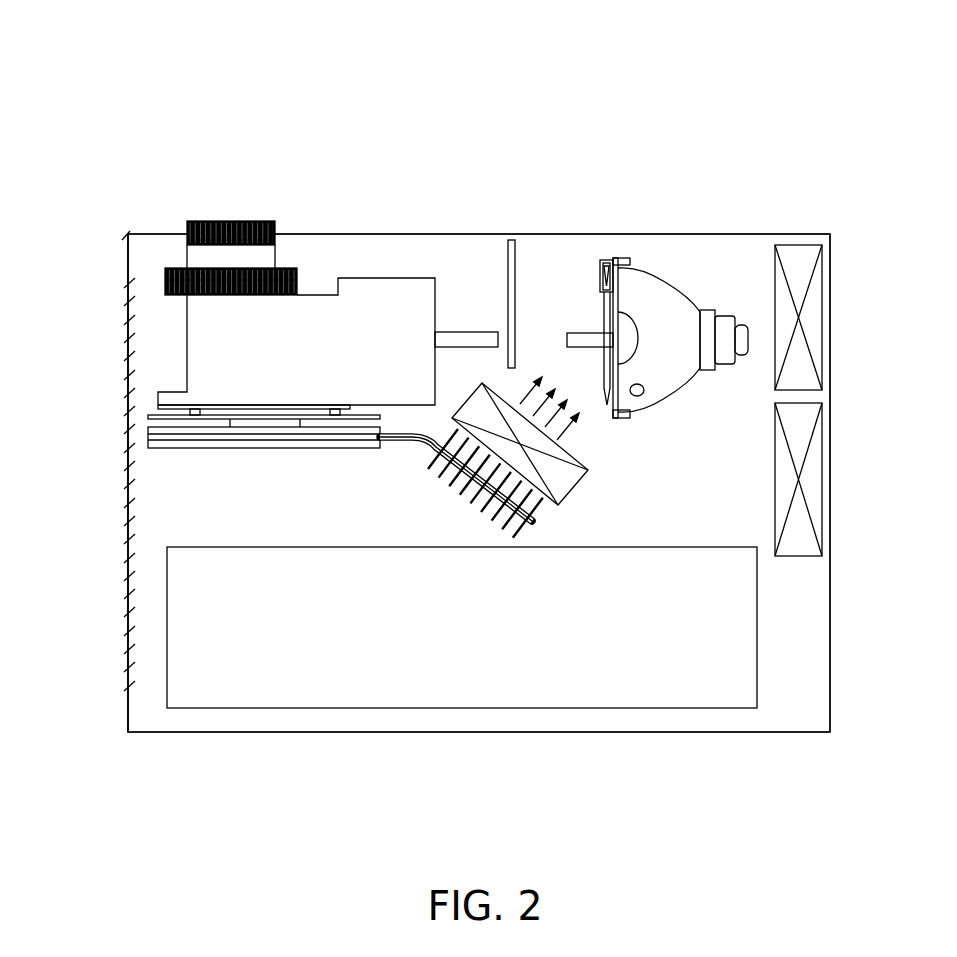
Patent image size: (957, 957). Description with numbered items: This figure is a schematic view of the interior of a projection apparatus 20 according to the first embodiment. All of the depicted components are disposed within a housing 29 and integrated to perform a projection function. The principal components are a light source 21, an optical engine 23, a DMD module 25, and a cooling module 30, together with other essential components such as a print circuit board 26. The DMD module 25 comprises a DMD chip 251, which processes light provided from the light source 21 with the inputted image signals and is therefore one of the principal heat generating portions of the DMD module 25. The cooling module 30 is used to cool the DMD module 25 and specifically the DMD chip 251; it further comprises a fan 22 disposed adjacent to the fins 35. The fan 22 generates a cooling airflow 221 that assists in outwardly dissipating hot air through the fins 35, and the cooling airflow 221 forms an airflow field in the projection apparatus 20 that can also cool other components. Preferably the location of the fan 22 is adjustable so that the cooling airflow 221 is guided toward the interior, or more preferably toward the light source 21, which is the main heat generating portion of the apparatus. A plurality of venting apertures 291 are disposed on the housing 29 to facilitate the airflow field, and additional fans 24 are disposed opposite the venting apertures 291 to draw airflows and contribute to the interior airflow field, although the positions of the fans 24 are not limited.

The projection apparatus 20 is at (132, 49).
The housing 29 is at (450, 447).
The venting apertures 291 is at (83, 478).
The optical engine 23 is at (328, 276).
The DMD module 25 is at (194, 384).
The DMD chip 251 is at (213, 435).
The cooling module 30 is at (264, 487).
The fins 35 is at (460, 487).
The fan 22 is at (555, 454).
The cooling airflow 221 is at (596, 423).
The light source 21 is at (657, 290).
The fans 24 is at (833, 400).
The print circuit board 26 is at (462, 678).